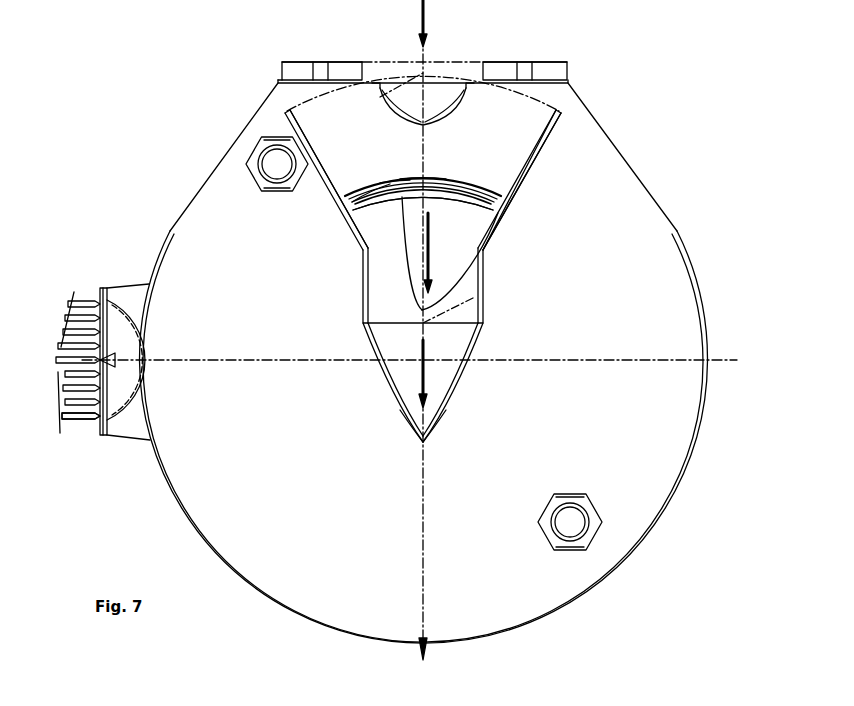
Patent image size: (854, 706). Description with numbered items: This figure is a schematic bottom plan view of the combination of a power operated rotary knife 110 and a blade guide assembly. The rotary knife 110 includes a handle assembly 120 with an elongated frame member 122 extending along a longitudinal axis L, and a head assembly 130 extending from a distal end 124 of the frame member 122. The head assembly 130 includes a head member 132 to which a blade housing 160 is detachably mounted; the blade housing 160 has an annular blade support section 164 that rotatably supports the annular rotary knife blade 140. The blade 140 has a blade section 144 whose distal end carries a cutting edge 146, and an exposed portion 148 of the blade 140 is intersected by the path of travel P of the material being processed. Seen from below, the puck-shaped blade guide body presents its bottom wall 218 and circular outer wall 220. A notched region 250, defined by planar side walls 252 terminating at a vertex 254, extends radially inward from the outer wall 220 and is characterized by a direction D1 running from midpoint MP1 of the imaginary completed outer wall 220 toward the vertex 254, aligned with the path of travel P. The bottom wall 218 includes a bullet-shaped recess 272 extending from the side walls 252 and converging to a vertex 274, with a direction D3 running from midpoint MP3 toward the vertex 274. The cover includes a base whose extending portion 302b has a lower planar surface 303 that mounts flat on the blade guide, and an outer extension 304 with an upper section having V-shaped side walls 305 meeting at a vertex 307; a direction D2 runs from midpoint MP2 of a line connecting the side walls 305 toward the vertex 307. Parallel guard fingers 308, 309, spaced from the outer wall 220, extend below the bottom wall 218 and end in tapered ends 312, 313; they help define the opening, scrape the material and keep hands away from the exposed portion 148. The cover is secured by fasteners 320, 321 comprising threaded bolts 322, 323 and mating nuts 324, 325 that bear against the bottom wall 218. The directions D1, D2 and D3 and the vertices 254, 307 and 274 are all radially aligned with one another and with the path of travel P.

The power operated rotary knife 110 is at (92, 290).
The handle assembly 120 is at (82, 427).
The elongated frame member 122 is at (73, 430).
The distal end 124 is at (98, 437).
The head assembly 130 is at (128, 450).
The head member 132 is at (127, 352).
The rotary knife blade 140 is at (374, 207).
The blade section 144 is at (403, 203).
The cutting edge 146 is at (424, 177).
The exposed portion 148 is at (395, 177).
The blade housing 160 is at (449, 175).
The annular blade support section 164 is at (366, 180).
The bottom wall 218 is at (598, 306).
The outer wall 220 is at (247, 582).
The notched region 250 is at (533, 115).
The planar side walls 252 is at (343, 172).
The vertex 254 is at (416, 303).
The bullet-shaped recess 272 is at (449, 333).
The vertex 274 is at (426, 434).
The extending portion 302b is at (545, 123).
The lower planar surface 303 is at (548, 136).
The outer extension 304 is at (275, 83).
The V-shaped side walls 305 is at (383, 80).
The vertex 307 is at (450, 100).
The guard finger 308 is at (345, 61).
The guard finger 309 is at (537, 57).
The tapered end 312 is at (296, 68).
The tapered end 313 is at (507, 68).
The fastener 320 is at (584, 516).
The fastener 321 is at (275, 160).
The threaded bolt 322 is at (578, 532).
The threaded bolt 323 is at (276, 172).
The nut 324 is at (572, 553).
The nut 325 is at (268, 196).
The direction of the notched region D1 is at (430, 250).
The direction of the opening D2 is at (426, 36).
The direction of the recess D3 is at (430, 375).
The longitudinal axis L is at (731, 360).
The path of travel P is at (423, 600).
The midpoint MP1 is at (398, 96).
The midpoint MP2 is at (418, 62).
The midpoint MP3 is at (473, 298).